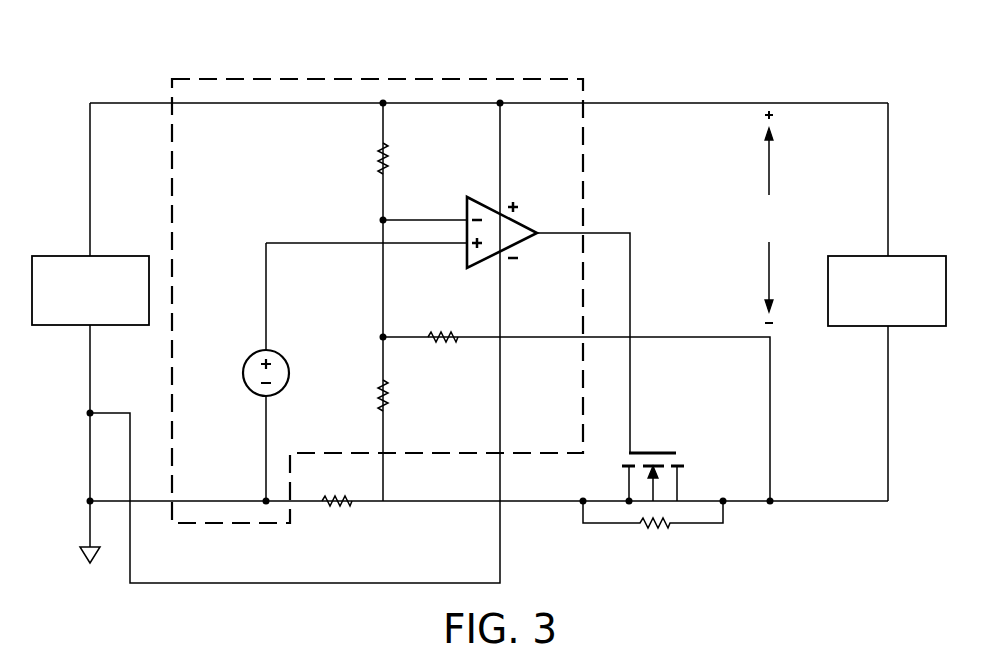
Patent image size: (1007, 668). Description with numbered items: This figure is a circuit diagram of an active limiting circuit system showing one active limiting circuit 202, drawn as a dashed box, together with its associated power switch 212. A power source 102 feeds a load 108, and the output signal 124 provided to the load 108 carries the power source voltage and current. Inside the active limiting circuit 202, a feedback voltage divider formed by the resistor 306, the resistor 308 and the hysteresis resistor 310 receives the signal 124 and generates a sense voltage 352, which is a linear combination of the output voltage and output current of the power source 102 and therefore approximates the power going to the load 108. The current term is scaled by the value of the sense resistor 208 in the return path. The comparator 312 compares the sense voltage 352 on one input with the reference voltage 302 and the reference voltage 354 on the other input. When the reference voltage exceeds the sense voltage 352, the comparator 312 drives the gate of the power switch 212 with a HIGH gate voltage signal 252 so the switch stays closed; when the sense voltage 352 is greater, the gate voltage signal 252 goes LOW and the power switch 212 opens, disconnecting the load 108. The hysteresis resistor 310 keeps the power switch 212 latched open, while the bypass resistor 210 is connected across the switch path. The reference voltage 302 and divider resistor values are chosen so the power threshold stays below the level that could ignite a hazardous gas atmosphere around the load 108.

The power source 102 is at (68, 254).
The load 108 is at (911, 255).
The signal 124 is at (803, 215).
The active limiting circuit 202 is at (348, 80).
The sense resistor 208 is at (333, 507).
The bypass resistor 210 is at (653, 530).
The power switch 212 is at (667, 452).
The gate voltage signal 252 is at (630, 283).
The reference voltage 302 is at (250, 397).
The resistor 306 is at (380, 160).
The resistor 308 is at (378, 397).
The hysteresis resistor 310 is at (440, 345).
The comparator 312 is at (522, 223).
The sense voltage 352 is at (443, 217).
The reference voltage 354 is at (443, 247).